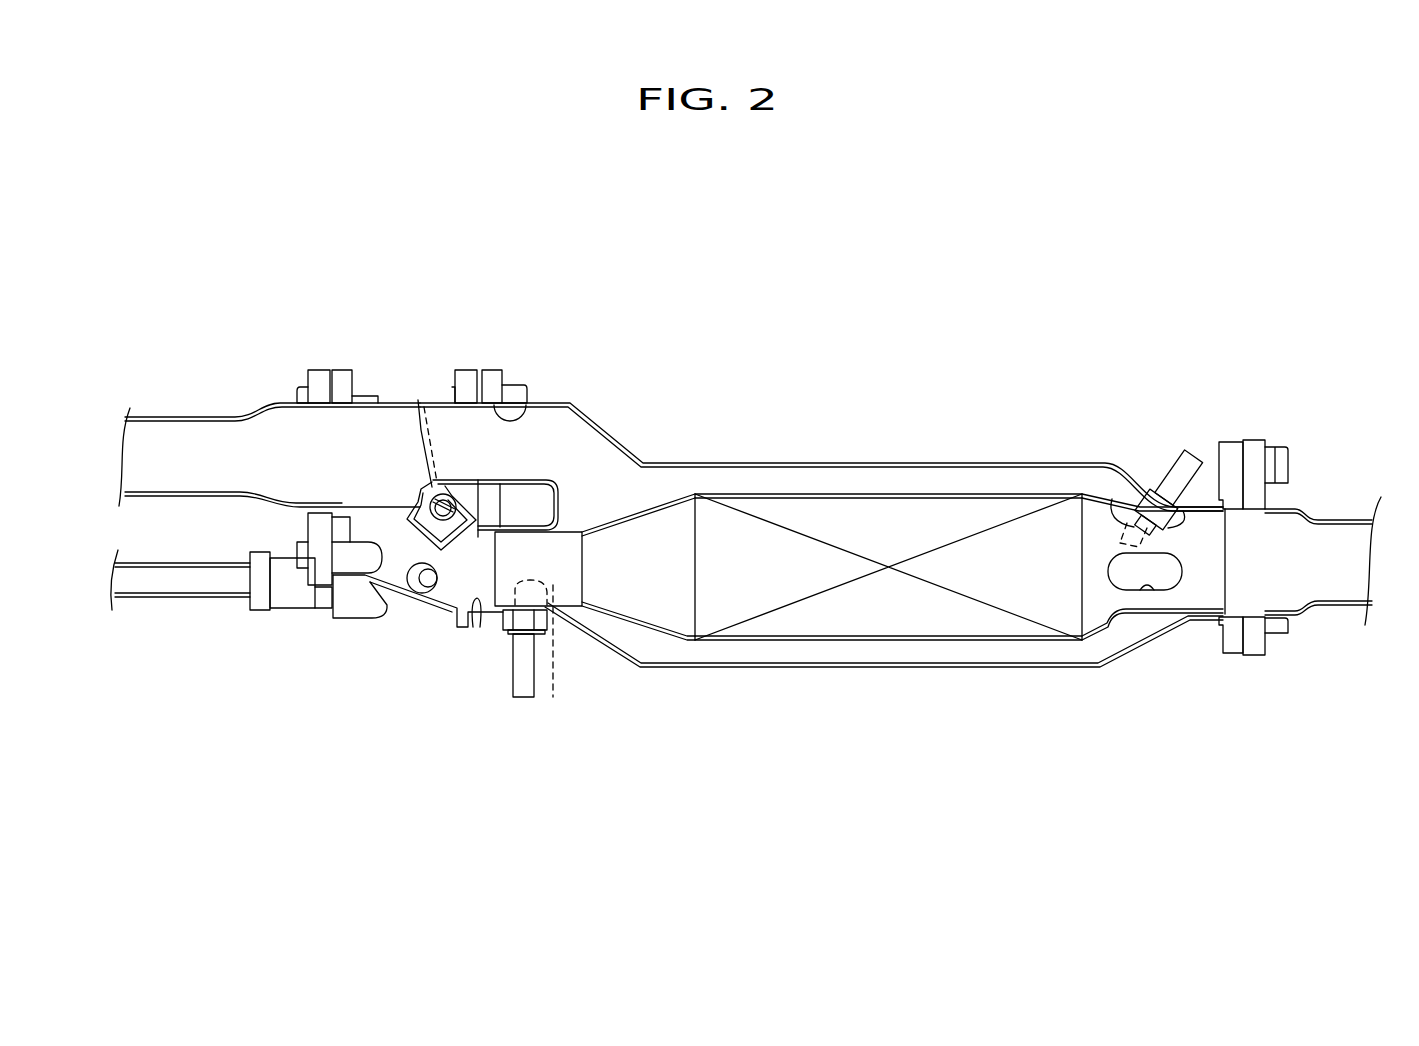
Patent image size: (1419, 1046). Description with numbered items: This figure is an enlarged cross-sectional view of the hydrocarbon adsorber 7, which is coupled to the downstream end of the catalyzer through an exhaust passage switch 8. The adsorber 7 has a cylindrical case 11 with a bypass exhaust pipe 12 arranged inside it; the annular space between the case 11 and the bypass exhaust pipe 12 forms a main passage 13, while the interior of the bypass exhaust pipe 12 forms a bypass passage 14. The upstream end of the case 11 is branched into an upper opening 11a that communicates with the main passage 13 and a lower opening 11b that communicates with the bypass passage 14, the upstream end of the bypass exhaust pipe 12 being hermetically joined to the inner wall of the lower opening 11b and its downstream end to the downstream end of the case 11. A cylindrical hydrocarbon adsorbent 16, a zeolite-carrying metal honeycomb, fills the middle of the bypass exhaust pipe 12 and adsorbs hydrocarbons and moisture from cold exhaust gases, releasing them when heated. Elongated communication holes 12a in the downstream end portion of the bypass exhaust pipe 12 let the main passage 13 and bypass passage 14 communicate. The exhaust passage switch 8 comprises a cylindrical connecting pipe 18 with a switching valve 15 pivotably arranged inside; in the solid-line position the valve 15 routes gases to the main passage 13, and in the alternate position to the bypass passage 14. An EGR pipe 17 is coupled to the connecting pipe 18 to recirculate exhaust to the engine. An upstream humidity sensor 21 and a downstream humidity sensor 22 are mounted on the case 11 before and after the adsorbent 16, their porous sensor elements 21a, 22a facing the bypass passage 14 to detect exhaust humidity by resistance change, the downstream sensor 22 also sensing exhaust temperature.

The hydrocarbon adsorber 7 is at (850, 297).
The exhaust passage switch 8 is at (425, 300).
The case 11 is at (927, 463).
The upper opening 11a is at (510, 415).
The lower opening 11b is at (475, 605).
The bypass exhaust pipe 12 is at (620, 618).
The communication holes 12a is at (1147, 592).
The main passage 13 is at (603, 488).
The bypass passage 14 is at (657, 578).
The switching valve 15 is at (428, 470).
The hydrocarbon adsorbent 16 is at (917, 627).
The EGR pipe 17 is at (190, 598).
The connecting pipe 18 is at (400, 395).
The upstream humidity sensor 21 is at (510, 700).
The sensor element 21a is at (547, 657).
The downstream humidity sensor 22 is at (1181, 444).
The sensor element 22a is at (1122, 535).